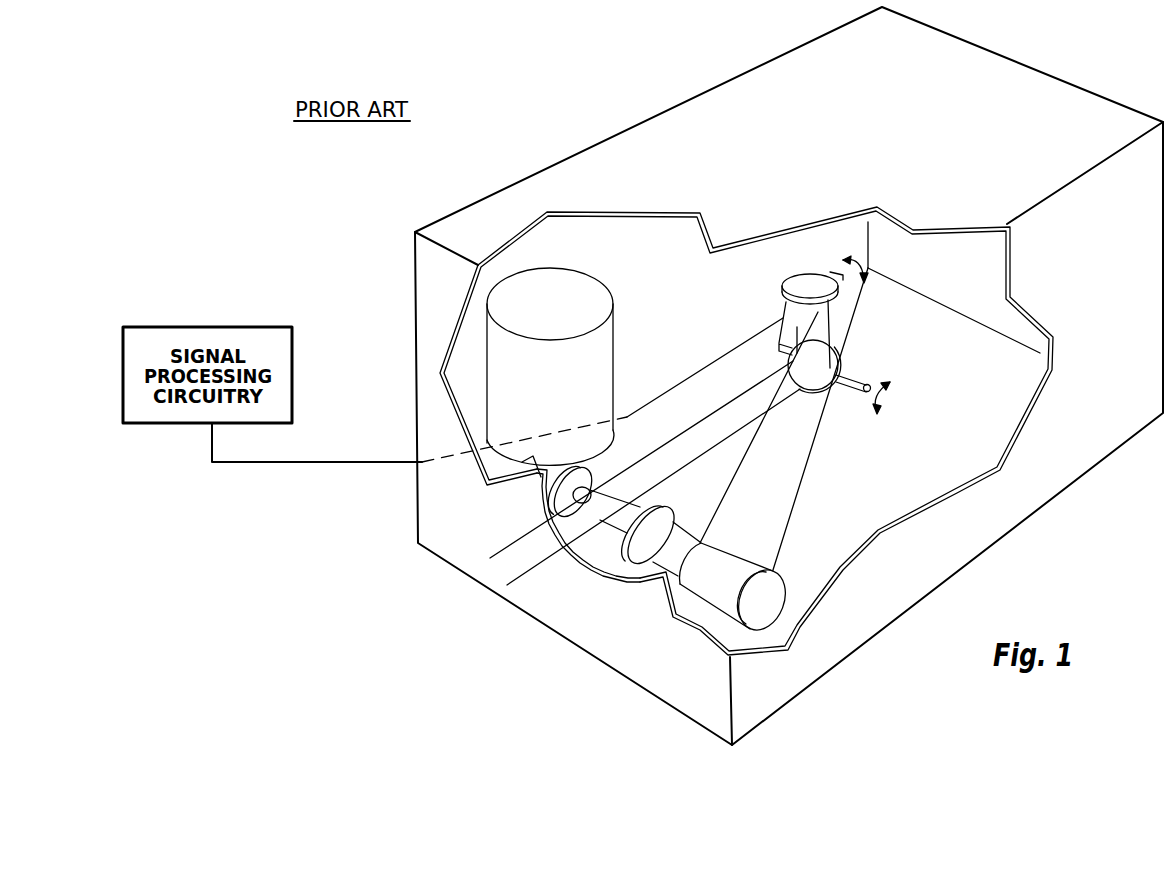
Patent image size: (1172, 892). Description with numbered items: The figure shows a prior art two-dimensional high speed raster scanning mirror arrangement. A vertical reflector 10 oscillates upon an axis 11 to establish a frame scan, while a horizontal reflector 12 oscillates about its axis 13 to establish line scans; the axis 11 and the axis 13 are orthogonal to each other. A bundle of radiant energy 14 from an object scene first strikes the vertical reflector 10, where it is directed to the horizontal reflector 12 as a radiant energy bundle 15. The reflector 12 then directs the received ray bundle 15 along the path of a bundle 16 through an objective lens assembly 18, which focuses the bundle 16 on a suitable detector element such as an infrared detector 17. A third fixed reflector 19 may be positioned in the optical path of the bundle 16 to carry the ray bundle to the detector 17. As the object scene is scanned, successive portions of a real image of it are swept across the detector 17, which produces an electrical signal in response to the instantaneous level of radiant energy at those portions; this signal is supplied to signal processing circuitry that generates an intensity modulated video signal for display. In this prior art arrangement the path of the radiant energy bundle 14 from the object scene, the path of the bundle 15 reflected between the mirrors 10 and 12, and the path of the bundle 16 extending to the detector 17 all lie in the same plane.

The reflector 10 is at (822, 395).
The axis 11 is at (858, 372).
The reflector 12 is at (790, 279).
The axis 13 is at (830, 275).
The bundle of radiant energy 14 is at (547, 553).
The radiant energy bundle 15 is at (832, 313).
The bundle 16 is at (777, 350).
The infrared detector 17 is at (600, 473).
The objective lens assembly 18 is at (625, 581).
The third fixed reflector 19 is at (708, 593).